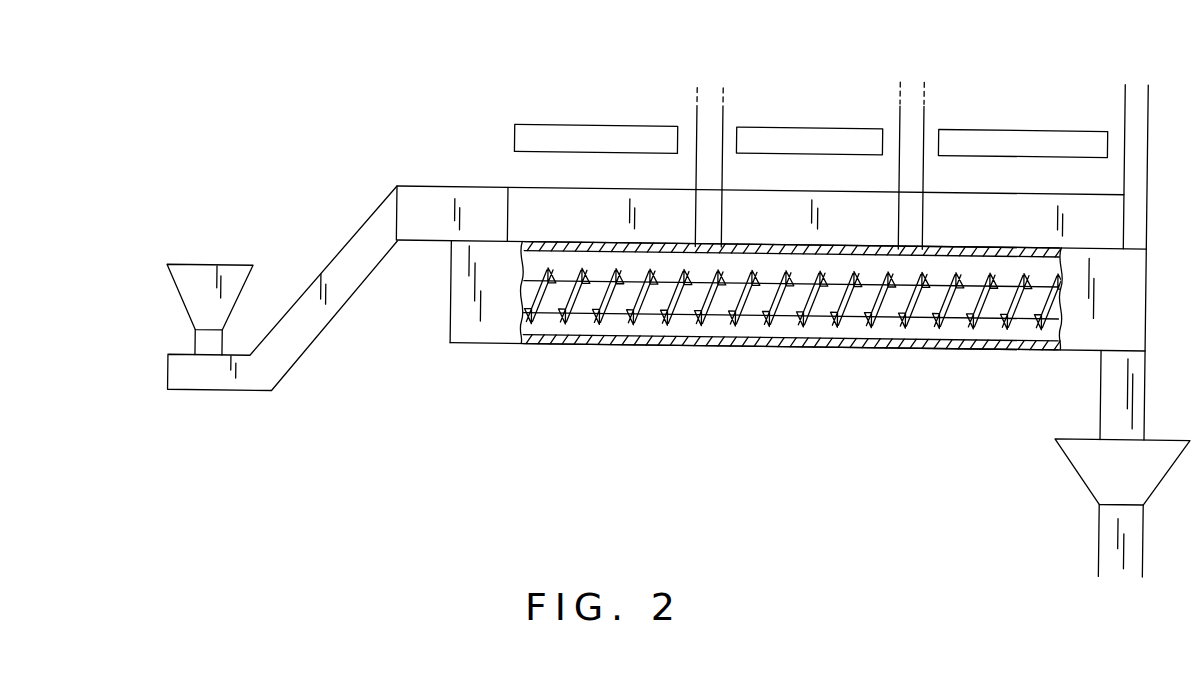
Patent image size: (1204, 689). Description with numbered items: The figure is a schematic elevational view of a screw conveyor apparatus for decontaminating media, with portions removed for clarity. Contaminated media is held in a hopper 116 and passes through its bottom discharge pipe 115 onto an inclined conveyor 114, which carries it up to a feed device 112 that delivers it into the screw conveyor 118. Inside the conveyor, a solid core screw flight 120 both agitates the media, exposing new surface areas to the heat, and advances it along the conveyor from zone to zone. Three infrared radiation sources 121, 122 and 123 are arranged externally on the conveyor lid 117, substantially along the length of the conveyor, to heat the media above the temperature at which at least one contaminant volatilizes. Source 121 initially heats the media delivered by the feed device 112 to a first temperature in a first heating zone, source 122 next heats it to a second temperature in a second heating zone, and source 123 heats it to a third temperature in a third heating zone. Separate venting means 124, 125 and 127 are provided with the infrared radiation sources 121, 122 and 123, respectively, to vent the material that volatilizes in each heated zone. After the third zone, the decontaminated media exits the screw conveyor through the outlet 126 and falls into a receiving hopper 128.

The feed device 112 is at (420, 200).
The inclined conveyor 114 is at (346, 268).
The bottom discharge pipe 115 is at (205, 345).
The hopper 116 is at (209, 279).
The conveyor lid 117 is at (520, 202).
The screw conveyor 118 is at (467, 317).
The solid core screw flight 120 is at (656, 302).
The infrared radiation source 121 is at (576, 133).
The infrared radiation source 122 is at (799, 132).
The infrared radiation source 123 is at (982, 135).
The venting means 124 is at (1136, 113).
The venting means 125 is at (707, 106).
The outlet 126 is at (1120, 391).
The venting means 127 is at (911, 109).
The hopper 128 is at (1101, 454).